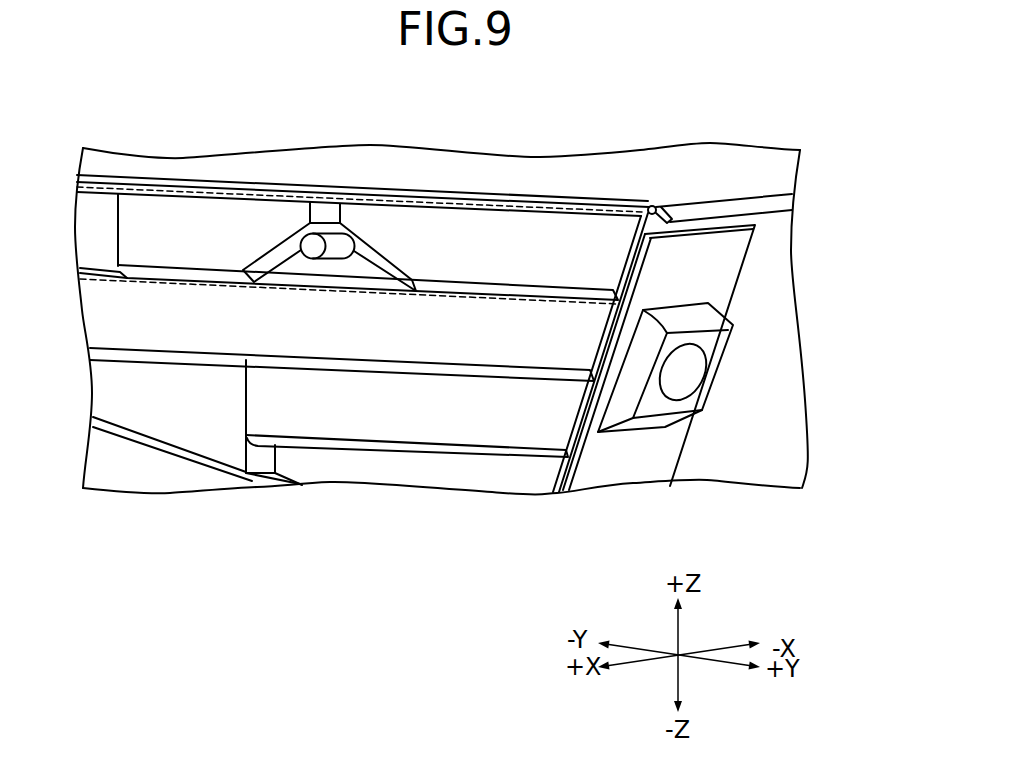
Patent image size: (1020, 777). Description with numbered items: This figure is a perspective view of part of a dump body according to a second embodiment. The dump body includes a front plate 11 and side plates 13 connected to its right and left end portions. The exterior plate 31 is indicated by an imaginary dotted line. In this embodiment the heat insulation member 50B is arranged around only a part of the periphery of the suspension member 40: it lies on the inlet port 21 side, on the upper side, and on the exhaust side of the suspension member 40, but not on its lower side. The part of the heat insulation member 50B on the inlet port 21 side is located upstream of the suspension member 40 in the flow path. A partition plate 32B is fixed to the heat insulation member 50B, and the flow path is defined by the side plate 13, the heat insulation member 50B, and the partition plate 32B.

The front plate 11 is at (722, 460).
The side plate 13 is at (380, 190).
The inlet port 21 is at (693, 373).
The exterior plate 31 is at (102, 203).
The partition plate 32B is at (413, 225).
The suspension member 40 is at (328, 242).
The heat insulation member 50B is at (342, 228).